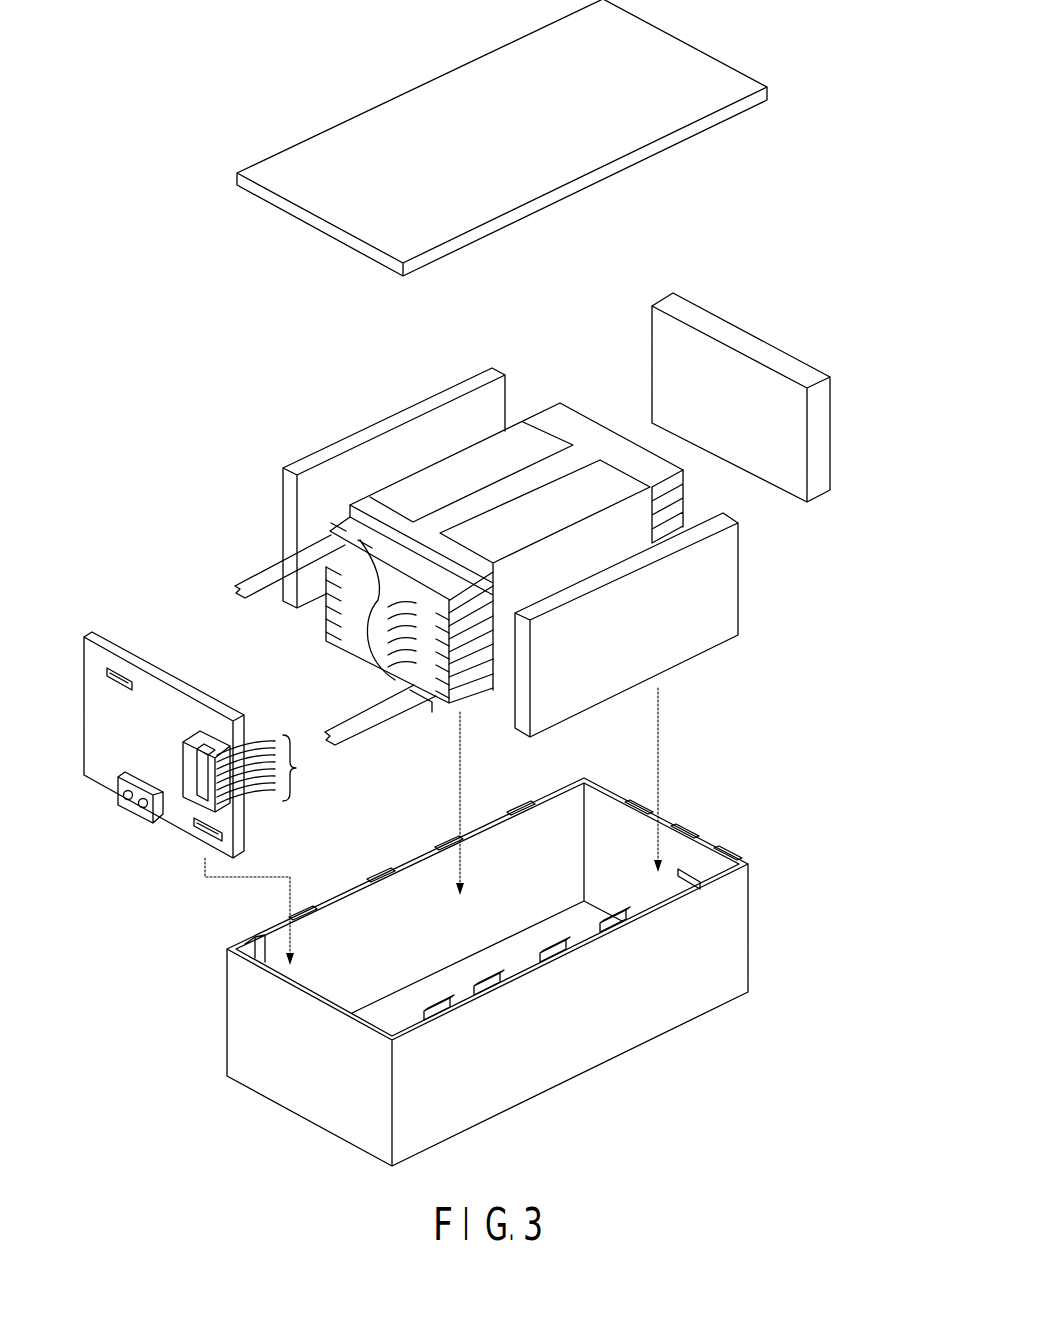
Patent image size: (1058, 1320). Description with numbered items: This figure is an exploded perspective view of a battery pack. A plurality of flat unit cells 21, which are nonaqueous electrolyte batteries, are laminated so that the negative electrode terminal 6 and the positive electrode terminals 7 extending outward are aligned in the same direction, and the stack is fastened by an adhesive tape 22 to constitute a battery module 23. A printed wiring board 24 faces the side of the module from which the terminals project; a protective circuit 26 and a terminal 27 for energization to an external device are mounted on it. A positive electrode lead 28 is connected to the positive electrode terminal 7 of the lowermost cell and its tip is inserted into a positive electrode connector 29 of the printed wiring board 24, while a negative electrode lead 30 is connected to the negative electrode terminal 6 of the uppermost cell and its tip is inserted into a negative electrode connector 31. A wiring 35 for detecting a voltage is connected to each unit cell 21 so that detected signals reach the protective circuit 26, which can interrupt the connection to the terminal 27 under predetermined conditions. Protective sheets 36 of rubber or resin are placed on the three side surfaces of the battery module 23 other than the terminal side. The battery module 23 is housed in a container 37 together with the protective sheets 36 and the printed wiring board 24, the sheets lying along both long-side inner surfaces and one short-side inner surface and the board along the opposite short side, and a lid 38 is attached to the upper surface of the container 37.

The lid 38 is at (705, 72).
The protective sheets 36 is at (723, 613).
The battery module 23 is at (445, 462).
The adhesive tape 22 is at (587, 490).
The unit cells 21 is at (712, 528).
The negative electrode terminal 6 is at (328, 533).
The positive electrode terminals 7 is at (433, 712).
The negative electrode lead 30 is at (243, 580).
The positive electrode lead 28 is at (373, 728).
The wiring 35 is at (360, 637).
The printed wiring board 24 is at (120, 640).
The negative electrode connector 31 is at (125, 677).
The protective circuit 26 is at (198, 737).
The terminal 27 is at (147, 813).
The positive electrode connector 29 is at (223, 837).
The container 37 is at (742, 938).